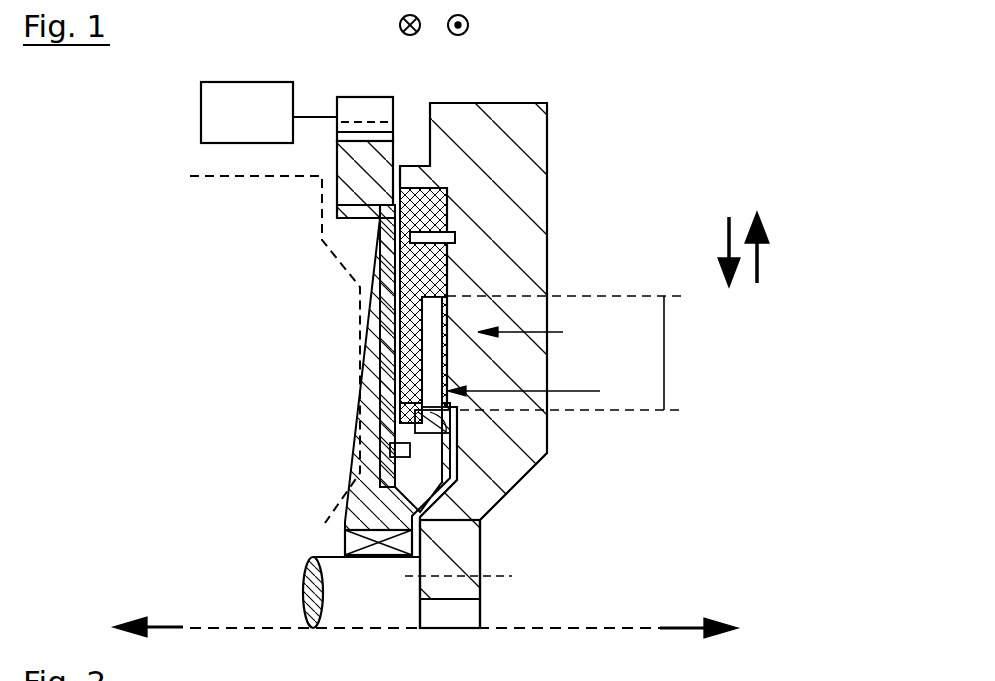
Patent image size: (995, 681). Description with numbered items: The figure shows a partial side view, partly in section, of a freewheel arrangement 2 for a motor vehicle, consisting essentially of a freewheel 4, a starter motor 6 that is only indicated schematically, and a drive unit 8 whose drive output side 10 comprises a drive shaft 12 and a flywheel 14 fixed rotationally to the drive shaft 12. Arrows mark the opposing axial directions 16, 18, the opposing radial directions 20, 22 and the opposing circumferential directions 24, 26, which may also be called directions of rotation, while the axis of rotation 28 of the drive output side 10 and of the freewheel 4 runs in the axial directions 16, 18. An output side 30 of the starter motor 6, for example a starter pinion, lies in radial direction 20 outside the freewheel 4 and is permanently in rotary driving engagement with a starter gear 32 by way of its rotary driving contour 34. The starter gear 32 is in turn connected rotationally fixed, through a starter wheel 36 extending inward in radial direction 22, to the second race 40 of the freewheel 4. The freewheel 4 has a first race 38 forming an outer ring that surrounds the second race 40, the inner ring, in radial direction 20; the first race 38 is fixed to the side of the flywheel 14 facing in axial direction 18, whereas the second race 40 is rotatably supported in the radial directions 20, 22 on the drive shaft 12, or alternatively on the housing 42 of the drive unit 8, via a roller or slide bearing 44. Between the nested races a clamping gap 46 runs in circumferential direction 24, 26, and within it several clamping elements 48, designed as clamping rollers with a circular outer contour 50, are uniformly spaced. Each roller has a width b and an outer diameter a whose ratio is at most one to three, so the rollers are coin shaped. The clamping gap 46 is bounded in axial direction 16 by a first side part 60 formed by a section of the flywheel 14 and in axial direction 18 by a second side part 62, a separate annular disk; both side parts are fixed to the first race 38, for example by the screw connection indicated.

The freewheel arrangement 2 is at (680, 120).
The freewheel 4 is at (528, 326).
The starter motor 6 is at (254, 128).
The drive unit 8 is at (232, 423).
The drive output side 10 is at (435, 614).
The drive shaft 12 is at (377, 605).
The flywheel 14 is at (535, 246).
The axial direction 16 is at (690, 624).
The opposite axial direction 18 is at (160, 622).
The radial direction 20 is at (762, 257).
The opposite radial direction 22 is at (727, 238).
The circumferential direction 24 is at (399, 27).
The opposite circumferential direction 26 is at (469, 28).
The axis of rotation 28 is at (583, 632).
The output side of starter motor 30 is at (347, 103).
The starter gear 32 is at (352, 178).
The rotary driving contour 34 is at (350, 137).
The starter wheel 36 is at (387, 257).
The first race 38 is at (433, 260).
The second race 40 is at (435, 460).
The housing 42 is at (360, 310).
The roller bearing or slide bearing 44 is at (345, 541).
The clamping gap 46 is at (537, 392).
The clamping elements 48 is at (432, 352).
The outer contour 50 is at (436, 375).
The first side part 60 is at (450, 342).
The second side part 62 is at (410, 332).
The outer diameter a is at (664, 353).
The width b is at (440, 452).